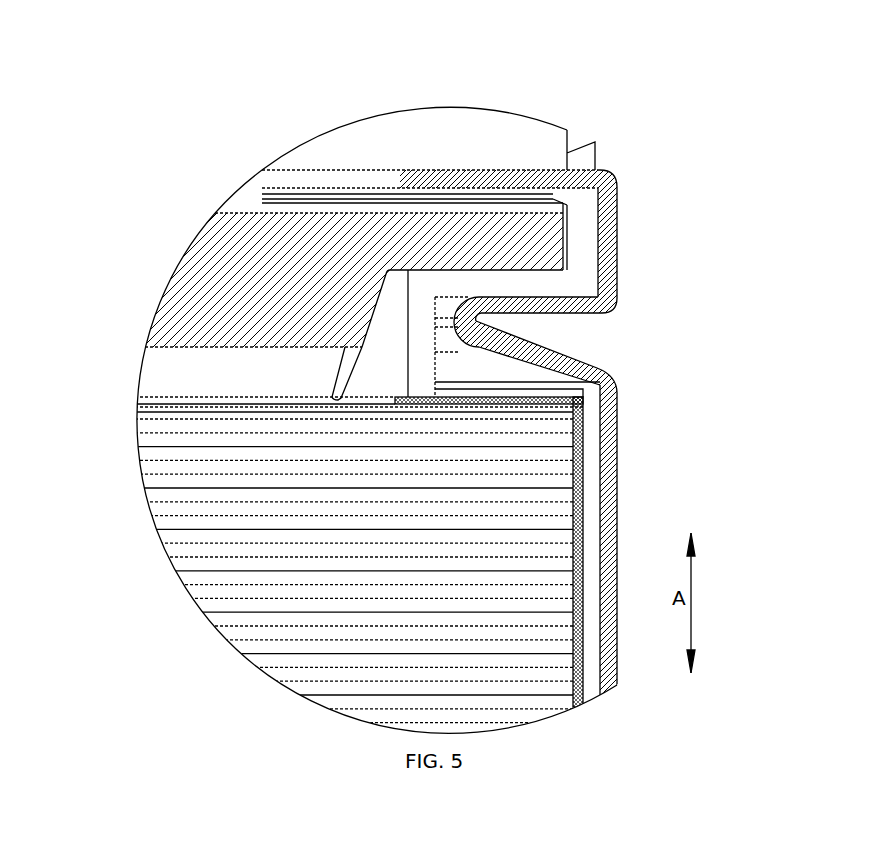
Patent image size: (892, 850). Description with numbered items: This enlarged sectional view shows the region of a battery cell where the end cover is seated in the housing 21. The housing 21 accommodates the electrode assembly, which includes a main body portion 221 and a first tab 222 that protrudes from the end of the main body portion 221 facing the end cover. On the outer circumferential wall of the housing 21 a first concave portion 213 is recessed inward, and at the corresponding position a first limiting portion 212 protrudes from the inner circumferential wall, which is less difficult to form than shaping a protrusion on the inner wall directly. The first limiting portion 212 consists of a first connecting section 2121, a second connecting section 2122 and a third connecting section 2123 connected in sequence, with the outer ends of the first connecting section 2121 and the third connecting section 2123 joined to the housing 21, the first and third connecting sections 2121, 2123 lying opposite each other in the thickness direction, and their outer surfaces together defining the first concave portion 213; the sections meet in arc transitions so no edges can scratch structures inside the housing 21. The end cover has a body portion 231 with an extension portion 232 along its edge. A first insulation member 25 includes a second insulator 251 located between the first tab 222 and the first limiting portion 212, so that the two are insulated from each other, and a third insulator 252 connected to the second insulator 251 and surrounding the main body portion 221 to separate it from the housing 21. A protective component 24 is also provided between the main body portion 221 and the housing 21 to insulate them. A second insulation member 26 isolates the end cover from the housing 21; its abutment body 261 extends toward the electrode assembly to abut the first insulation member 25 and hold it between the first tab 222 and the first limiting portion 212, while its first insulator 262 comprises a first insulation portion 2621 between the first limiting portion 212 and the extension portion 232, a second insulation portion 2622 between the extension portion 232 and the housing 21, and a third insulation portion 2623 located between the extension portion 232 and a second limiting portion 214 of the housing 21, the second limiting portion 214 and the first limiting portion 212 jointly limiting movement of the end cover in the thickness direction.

The housing 21 is at (604, 605).
The first limiting portion 212 is at (728, 285).
The first connecting section 2121 is at (540, 352).
The second connecting section 2122 is at (476, 323).
The third connecting section 2123 is at (617, 306).
The first concave portion 213 is at (333, 375).
The second limiting portion 214 is at (553, 168).
The main body portion 221 is at (238, 545).
The first tab 222 is at (447, 408).
The body portion 231 is at (250, 245).
The extension portion 232 is at (513, 242).
The protective component 24 is at (578, 583).
The first insulation member 25 is at (677, 428).
The second insulator 251 is at (500, 398).
The third insulator 252 is at (583, 480).
The second insulation member 26 is at (354, 28).
The abutment body 261 is at (417, 330).
The first insulator 262 is at (421, 48).
The first insulation portion 2621 is at (490, 287).
The second insulation portion 2622 is at (533, 197).
The third insulation portion 2623 is at (581, 243).